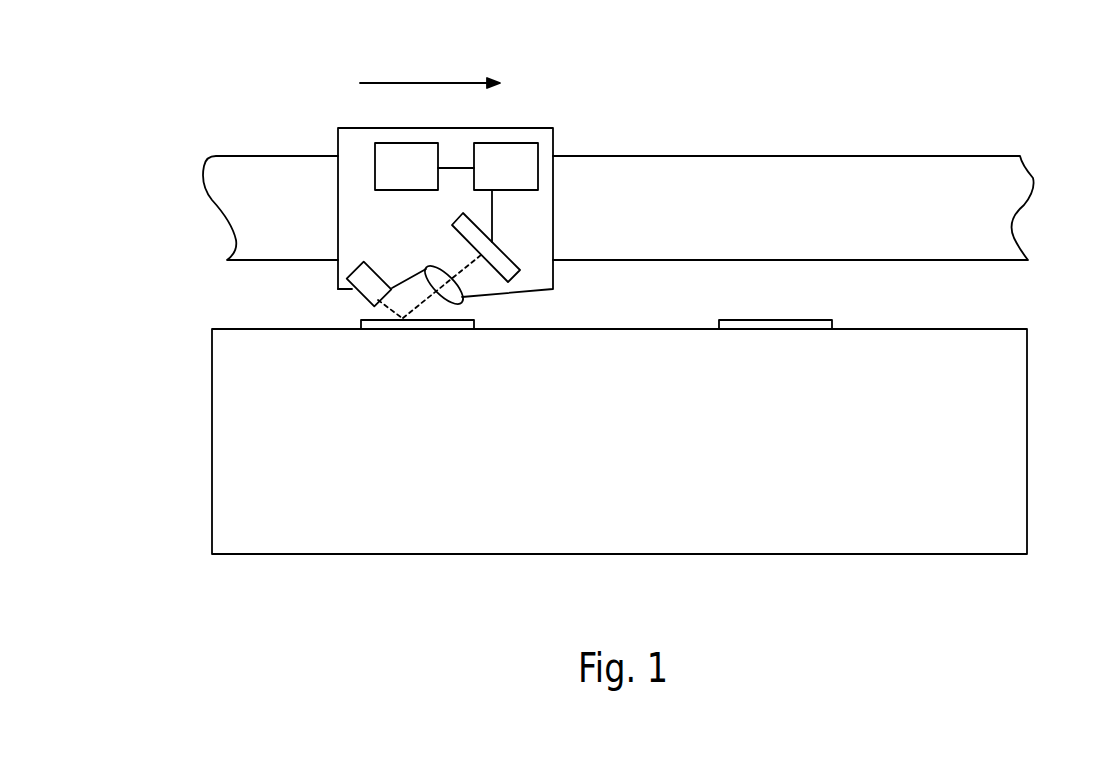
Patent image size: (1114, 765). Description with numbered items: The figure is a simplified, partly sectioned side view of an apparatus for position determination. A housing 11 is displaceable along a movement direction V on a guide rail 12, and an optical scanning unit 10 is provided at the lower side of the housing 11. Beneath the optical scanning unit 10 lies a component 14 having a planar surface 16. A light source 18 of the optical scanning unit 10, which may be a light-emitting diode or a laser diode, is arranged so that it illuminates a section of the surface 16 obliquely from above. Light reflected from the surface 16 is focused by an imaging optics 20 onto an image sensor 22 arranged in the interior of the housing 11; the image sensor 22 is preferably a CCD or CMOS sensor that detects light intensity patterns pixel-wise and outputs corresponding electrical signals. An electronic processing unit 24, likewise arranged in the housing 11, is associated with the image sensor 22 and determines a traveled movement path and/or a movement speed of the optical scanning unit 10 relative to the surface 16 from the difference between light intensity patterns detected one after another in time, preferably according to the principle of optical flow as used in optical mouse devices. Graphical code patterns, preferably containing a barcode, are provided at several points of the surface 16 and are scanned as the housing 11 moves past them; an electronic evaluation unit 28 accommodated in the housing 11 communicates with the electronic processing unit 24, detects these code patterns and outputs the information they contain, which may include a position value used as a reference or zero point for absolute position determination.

The optical scanning unit 10 is at (457, 179).
The housing 11 is at (352, 127).
The guide rail 12 is at (750, 176).
The component 14 is at (620, 461).
The planar surface 16 is at (945, 328).
The light source 18 is at (369, 280).
The imaging optics 20 is at (454, 286).
The image sensor 22 is at (500, 257).
The electronic processing unit 24 is at (488, 192).
The electronic evaluation unit 28 is at (406, 166).